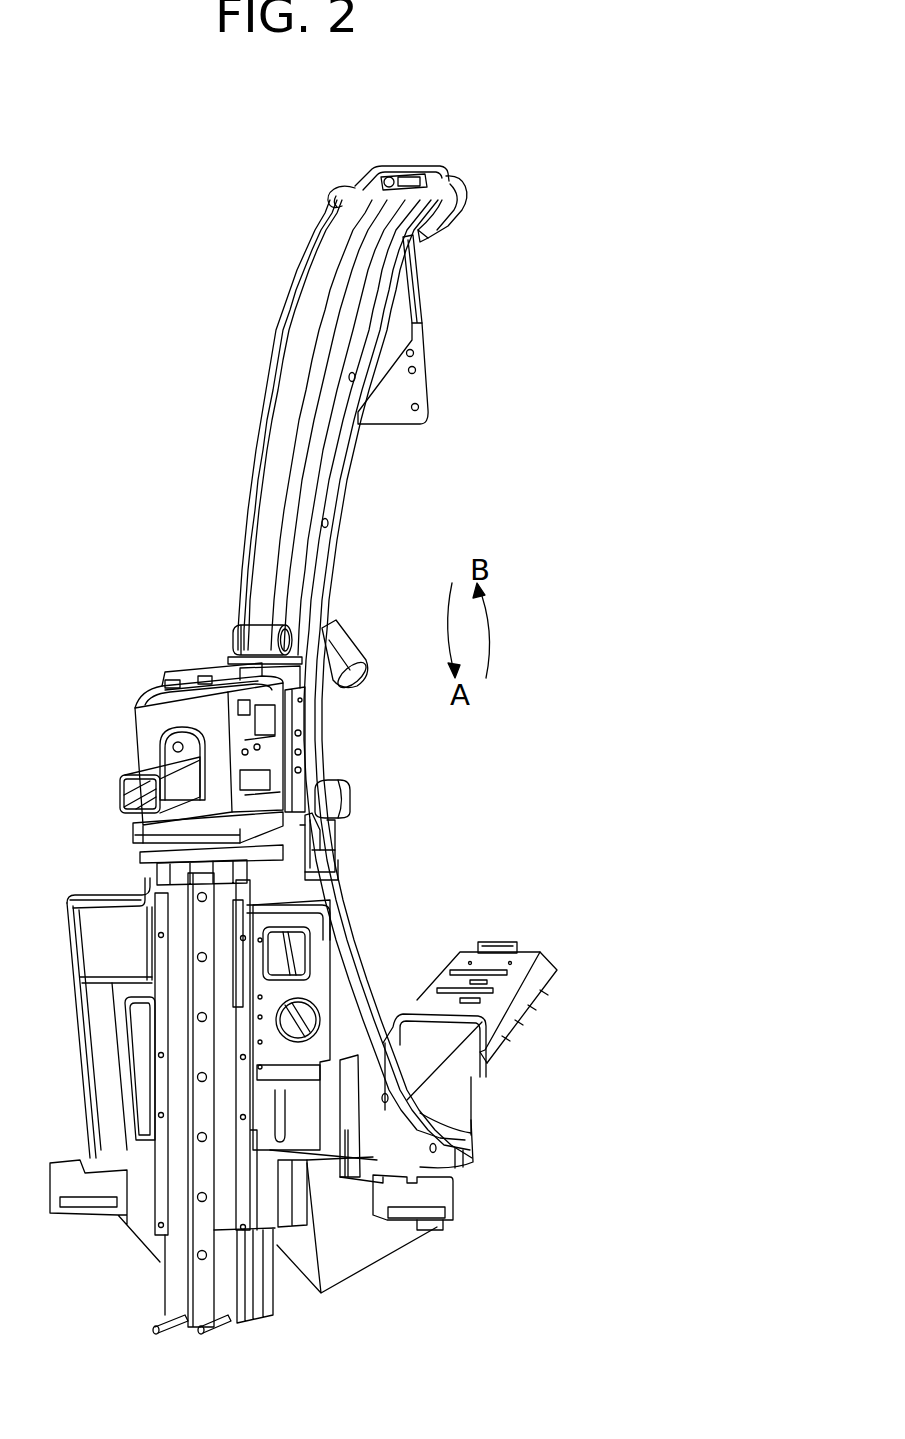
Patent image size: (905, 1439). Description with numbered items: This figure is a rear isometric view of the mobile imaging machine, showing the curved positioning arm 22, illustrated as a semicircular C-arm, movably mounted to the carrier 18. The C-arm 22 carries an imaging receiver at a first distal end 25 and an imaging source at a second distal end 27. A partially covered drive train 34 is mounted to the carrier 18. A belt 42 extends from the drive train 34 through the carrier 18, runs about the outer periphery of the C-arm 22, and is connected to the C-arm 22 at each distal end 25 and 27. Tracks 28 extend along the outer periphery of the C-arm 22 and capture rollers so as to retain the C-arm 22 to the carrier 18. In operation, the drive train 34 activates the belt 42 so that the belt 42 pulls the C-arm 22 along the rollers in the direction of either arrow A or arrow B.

The carrier 18 is at (303, 663).
The curved positioning arm 22 is at (352, 486).
The first distal end 25 is at (478, 185).
The second distal end 27 is at (484, 1179).
The tracks 28 is at (365, 188).
The drive train 34 is at (338, 851).
The belt 42 is at (303, 428).